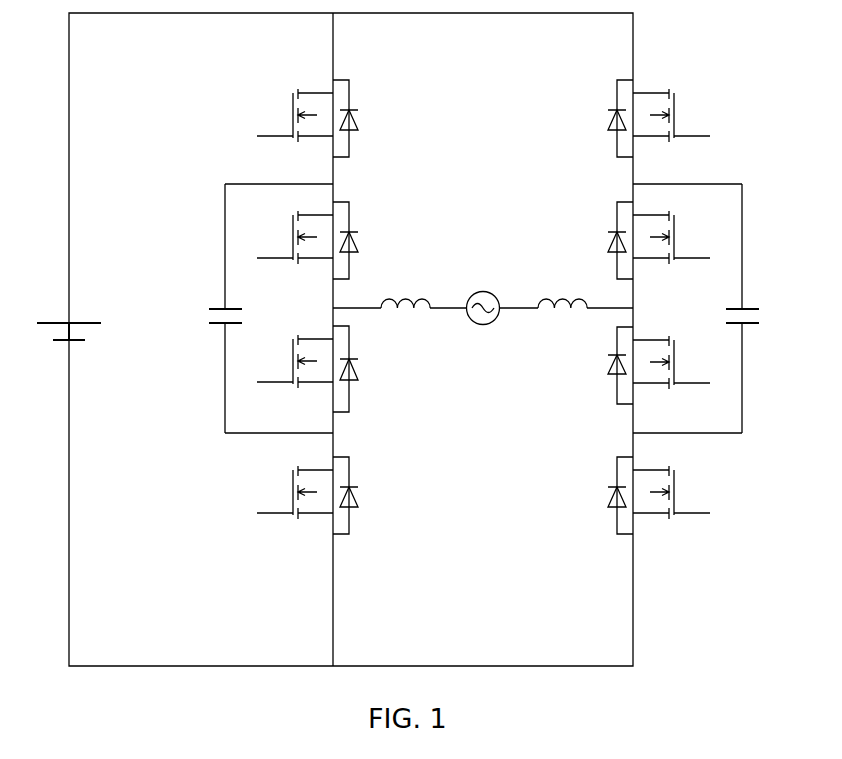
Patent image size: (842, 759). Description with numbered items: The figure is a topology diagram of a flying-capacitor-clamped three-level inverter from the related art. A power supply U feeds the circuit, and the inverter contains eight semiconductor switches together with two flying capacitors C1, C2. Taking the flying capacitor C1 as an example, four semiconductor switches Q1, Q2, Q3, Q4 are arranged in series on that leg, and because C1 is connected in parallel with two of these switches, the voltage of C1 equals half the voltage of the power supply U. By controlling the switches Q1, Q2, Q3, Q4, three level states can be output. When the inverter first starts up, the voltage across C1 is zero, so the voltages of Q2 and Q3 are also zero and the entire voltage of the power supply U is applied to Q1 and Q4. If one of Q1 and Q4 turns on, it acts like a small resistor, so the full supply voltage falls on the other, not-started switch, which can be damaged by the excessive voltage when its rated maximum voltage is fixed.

The power supply U is at (68, 315).
The flying capacitor C1 is at (213, 308).
The flying capacitor C2 is at (753, 308).
The semiconductor switch Q1 is at (483, 118).
The semiconductor switch Q2 is at (483, 240).
The semiconductor switch Q3 is at (483, 369).
The semiconductor switch Q4 is at (483, 495).